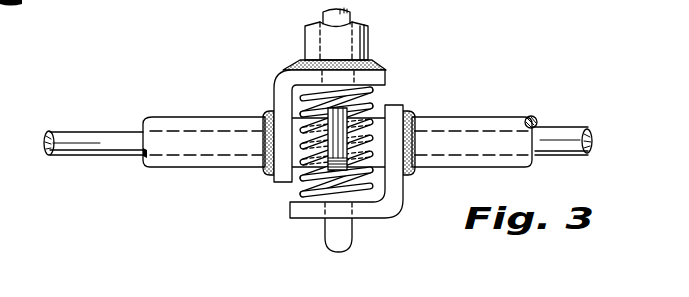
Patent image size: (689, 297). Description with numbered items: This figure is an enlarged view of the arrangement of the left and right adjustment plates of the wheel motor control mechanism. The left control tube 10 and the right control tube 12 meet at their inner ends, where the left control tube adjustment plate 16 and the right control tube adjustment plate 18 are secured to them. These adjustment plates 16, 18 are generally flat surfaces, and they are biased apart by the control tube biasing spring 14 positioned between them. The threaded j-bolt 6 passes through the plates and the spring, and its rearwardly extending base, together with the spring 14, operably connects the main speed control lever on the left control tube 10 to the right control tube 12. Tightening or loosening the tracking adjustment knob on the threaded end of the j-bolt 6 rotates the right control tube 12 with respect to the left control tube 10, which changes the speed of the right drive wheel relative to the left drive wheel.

The threaded j-bolt 6 is at (347, 237).
The left control tube 10 is at (184, 117).
The right control tube 12 is at (497, 117).
The control tube biasing spring 14 is at (355, 100).
The left control tube adjustment plate 16 is at (386, 76).
The right control tube adjustment plate 18 is at (290, 214).